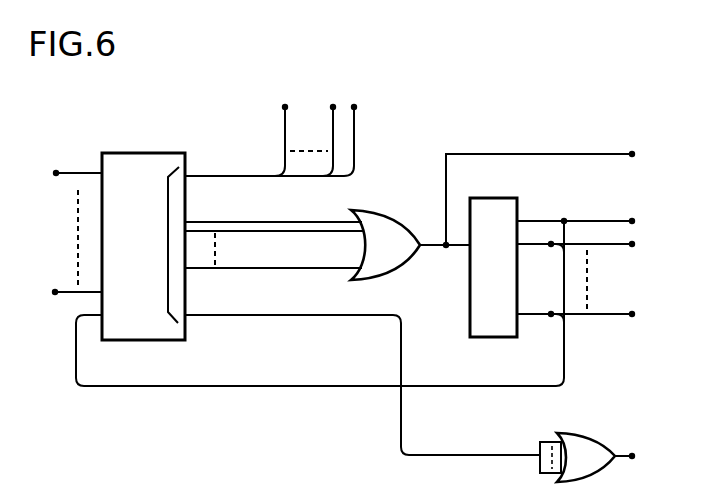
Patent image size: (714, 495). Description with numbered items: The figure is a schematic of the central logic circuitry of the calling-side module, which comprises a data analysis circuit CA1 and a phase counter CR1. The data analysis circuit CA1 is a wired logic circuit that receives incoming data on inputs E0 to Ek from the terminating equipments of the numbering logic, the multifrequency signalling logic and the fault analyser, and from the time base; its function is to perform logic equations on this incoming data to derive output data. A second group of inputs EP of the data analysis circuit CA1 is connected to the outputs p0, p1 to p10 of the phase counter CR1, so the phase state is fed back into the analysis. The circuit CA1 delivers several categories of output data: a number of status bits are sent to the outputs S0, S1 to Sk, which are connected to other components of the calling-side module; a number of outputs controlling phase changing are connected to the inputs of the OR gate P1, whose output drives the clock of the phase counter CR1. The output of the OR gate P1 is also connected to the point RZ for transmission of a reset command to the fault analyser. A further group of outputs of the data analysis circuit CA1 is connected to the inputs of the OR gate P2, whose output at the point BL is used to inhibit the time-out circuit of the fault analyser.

The data analysis circuit CA1 is at (143, 158).
The OR gate P1 is at (377, 223).
The phase counter CR1 is at (495, 203).
The OR gate P2 is at (578, 436).
The incoming data input E0 is at (64, 175).
The incoming data input Ek is at (64, 294).
The status bit output Sk is at (242, 130).
The status bit output S1 is at (310, 130).
The status bit output S0 is at (348, 130).
The reset command point RZ is at (554, 195).
The phase counter output p0 is at (589, 222).
The phase counter output p1 is at (589, 245).
The phase counter output p10 is at (595, 315).
The inhibit output point BL is at (638, 457).